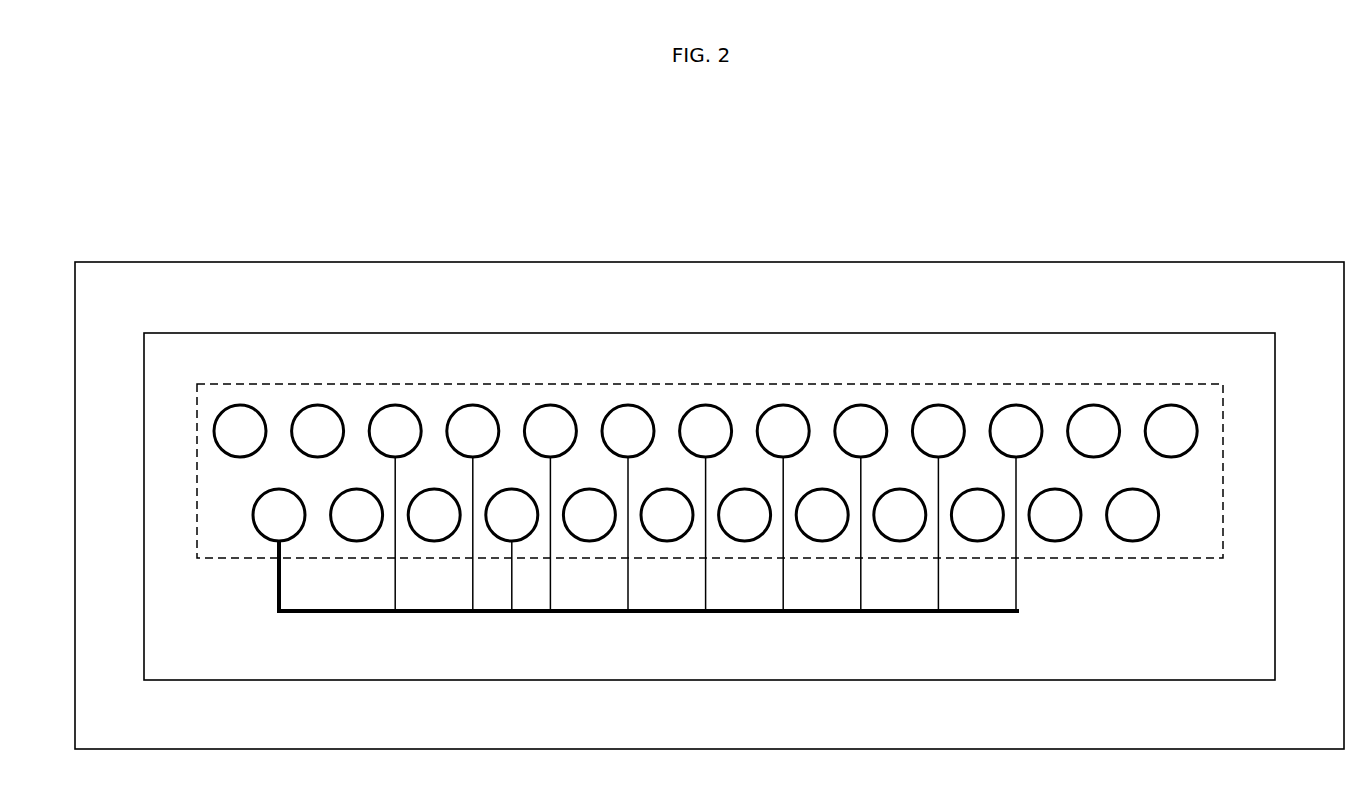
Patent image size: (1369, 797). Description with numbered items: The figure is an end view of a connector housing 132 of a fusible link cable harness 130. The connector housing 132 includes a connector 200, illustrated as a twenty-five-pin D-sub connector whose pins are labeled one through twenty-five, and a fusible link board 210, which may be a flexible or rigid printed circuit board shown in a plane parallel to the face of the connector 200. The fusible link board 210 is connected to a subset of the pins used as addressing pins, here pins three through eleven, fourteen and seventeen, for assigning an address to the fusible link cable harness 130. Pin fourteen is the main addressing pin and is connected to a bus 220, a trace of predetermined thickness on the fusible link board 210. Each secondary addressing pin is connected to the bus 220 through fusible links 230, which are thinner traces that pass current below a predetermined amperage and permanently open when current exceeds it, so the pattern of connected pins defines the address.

The fusible link cable harness 130 is at (931, 211).
The connector housing 132 is at (214, 262).
The fusible link board 210 is at (1136, 332).
The connector 200 is at (422, 384).
The bus 220 is at (276, 589).
The fusible links 230 is at (395, 585).